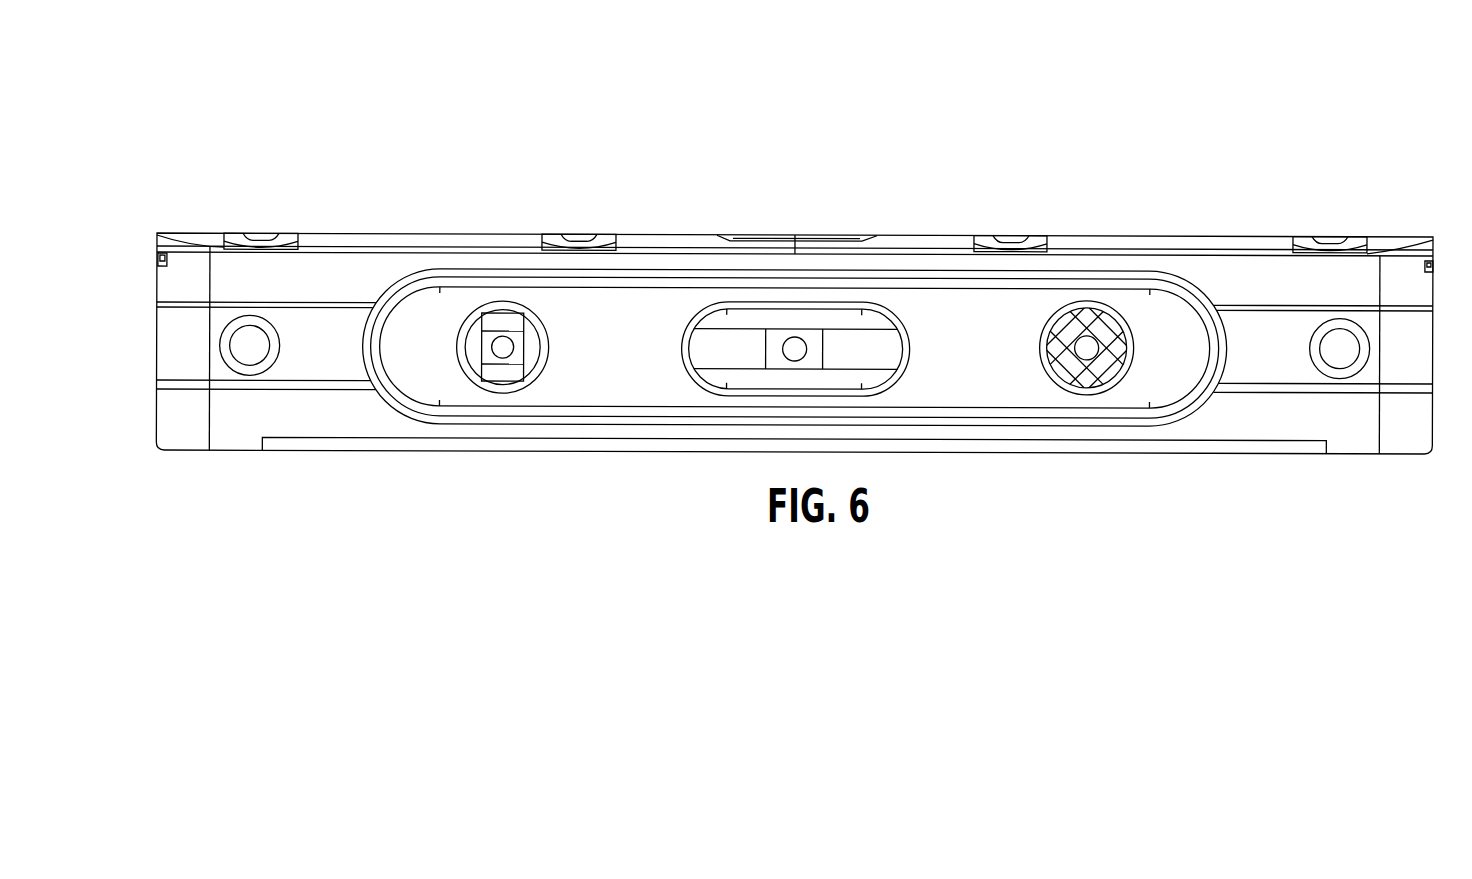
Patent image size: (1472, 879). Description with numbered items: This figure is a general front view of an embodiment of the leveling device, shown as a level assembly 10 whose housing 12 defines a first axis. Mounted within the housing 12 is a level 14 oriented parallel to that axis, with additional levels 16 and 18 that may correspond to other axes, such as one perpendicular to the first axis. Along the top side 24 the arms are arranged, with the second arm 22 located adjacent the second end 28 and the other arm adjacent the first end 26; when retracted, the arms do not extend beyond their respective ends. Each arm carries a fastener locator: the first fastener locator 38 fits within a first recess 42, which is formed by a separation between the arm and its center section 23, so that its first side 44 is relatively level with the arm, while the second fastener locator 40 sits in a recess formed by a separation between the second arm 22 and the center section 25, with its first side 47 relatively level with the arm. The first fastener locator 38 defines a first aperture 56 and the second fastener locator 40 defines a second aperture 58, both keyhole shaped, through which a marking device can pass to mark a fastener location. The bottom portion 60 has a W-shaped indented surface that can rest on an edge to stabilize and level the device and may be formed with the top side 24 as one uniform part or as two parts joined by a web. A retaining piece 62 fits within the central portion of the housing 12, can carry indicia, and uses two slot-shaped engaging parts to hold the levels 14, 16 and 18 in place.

The level assembly 10 is at (1243, 98).
The housing 12 is at (238, 418).
The level 14 is at (878, 358).
The level 16 is at (503, 375).
The level 18 is at (1105, 373).
The second arm 22 is at (1247, 240).
The center section 23 is at (757, 243).
The top side 24 is at (1202, 256).
The center section 25 is at (827, 243).
The first end 26 is at (157, 337).
The second end 28 is at (1437, 290).
The first fastener locator 38 is at (613, 220).
The second fastener locator 40 is at (972, 224).
The first recess 42 is at (540, 244).
The first side 44 is at (553, 237).
The first side 47 is at (1037, 240).
The first aperture 56 is at (580, 238).
The second aperture 58 is at (1012, 238).
The bottom portion 60 is at (585, 453).
The retaining piece 62 is at (990, 385).